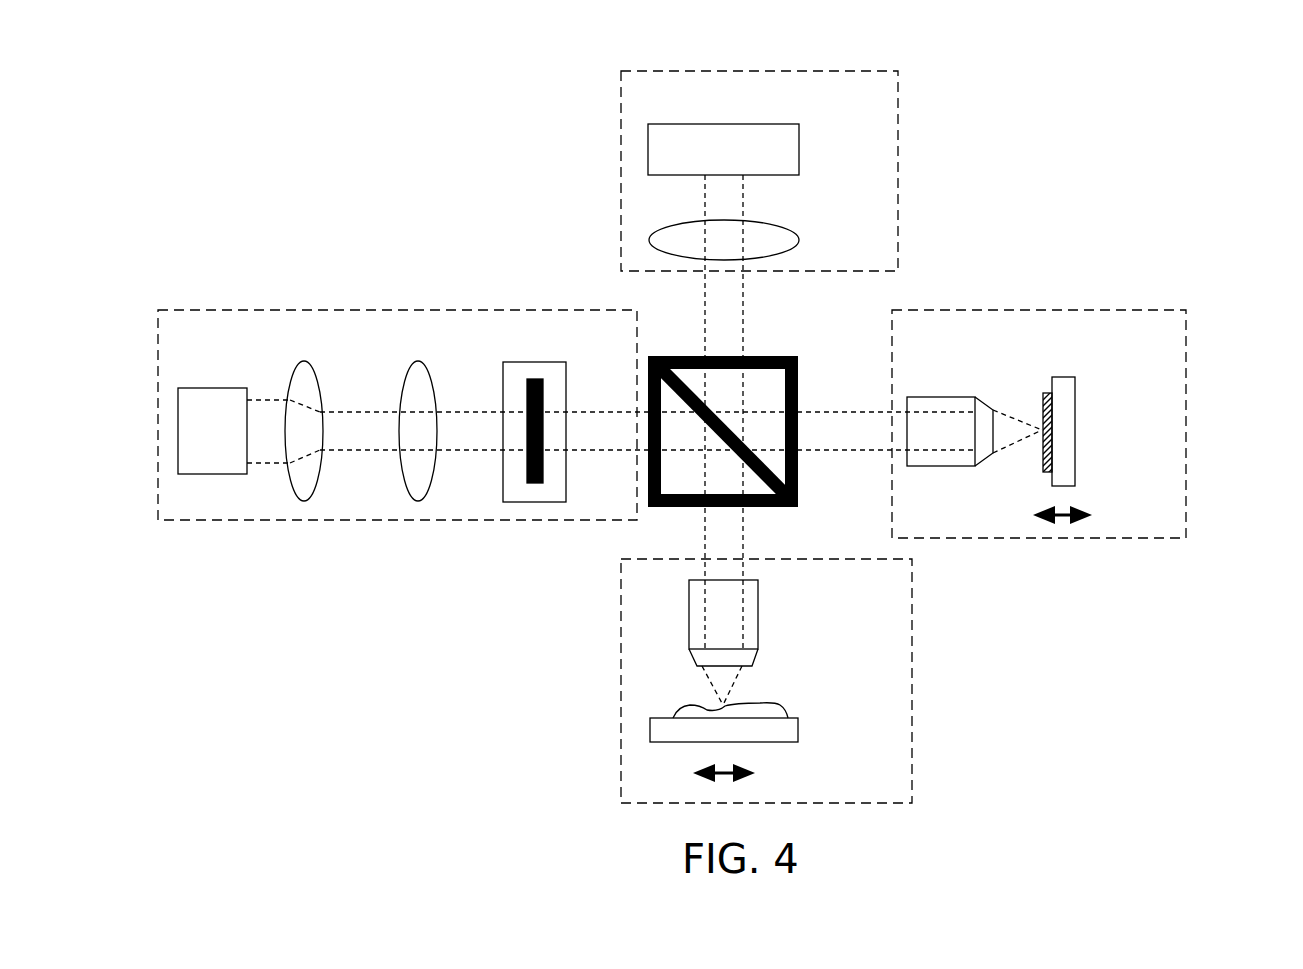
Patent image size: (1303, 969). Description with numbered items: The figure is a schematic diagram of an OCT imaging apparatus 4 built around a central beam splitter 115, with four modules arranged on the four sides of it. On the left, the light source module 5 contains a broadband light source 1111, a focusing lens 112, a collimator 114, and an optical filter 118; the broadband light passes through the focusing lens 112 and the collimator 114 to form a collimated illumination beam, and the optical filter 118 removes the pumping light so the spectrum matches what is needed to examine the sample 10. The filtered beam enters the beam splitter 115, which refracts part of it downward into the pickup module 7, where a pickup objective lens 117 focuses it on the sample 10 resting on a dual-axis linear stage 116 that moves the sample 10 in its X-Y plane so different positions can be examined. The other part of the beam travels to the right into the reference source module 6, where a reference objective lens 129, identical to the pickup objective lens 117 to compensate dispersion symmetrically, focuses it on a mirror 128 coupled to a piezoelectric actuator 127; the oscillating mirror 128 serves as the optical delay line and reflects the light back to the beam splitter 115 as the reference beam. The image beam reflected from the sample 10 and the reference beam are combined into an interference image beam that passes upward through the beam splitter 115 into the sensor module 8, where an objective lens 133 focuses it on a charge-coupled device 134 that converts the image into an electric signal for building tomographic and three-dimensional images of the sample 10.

The OCT imaging apparatus 4 is at (478, 243).
The light source module 5 is at (233, 310).
The reference source module 6 is at (1186, 424).
The pickup module 7 is at (912, 671).
The sensor module 8 is at (758, 71).
The sample 10 is at (770, 703).
The broadband light source 1111 is at (197, 388).
The focusing lens 112 is at (302, 361).
The collimator 114 is at (418, 361).
The optical filter 118 is at (537, 362).
The beam splitter 115 is at (758, 356).
The dual-axis linear stage 116 is at (798, 730).
The pickup objective lens 117 is at (758, 613).
The piezoelectric actuator 127 is at (1075, 428).
The mirror 128 is at (1043, 393).
The reference objective lens 129 is at (918, 397).
The objective lens 133 is at (790, 230).
The charge-coupled device (CCD) 134 is at (778, 124).